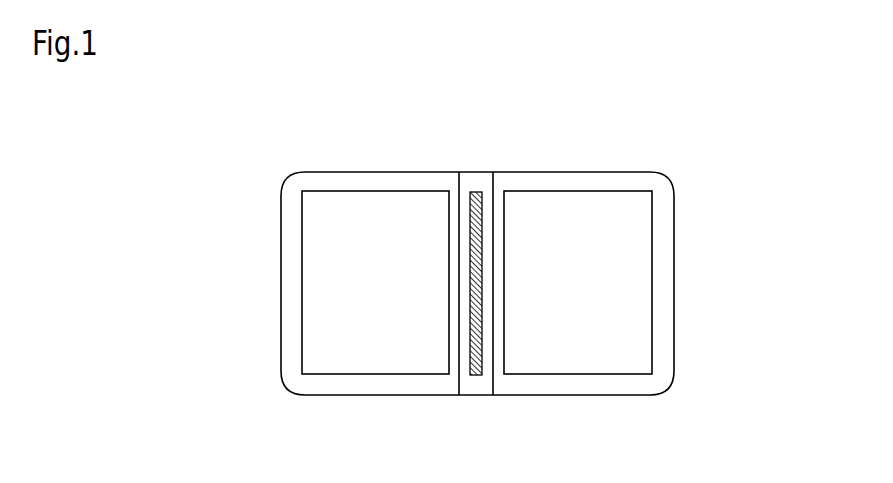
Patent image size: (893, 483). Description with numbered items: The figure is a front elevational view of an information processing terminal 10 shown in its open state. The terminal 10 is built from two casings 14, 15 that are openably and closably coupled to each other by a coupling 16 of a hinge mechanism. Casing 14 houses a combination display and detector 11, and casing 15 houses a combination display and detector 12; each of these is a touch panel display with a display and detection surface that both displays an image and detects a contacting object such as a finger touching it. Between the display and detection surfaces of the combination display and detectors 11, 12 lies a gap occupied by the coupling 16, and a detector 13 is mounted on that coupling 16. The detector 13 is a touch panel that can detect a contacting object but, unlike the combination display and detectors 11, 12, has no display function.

The information processing terminal 10 is at (519, 136).
The combination display and detector 11 is at (302, 302).
The combination display and detector 12 is at (652, 313).
The detector 13 is at (478, 375).
The casing 14 is at (281, 210).
The casing 15 is at (674, 202).
The coupling 16 is at (468, 395).